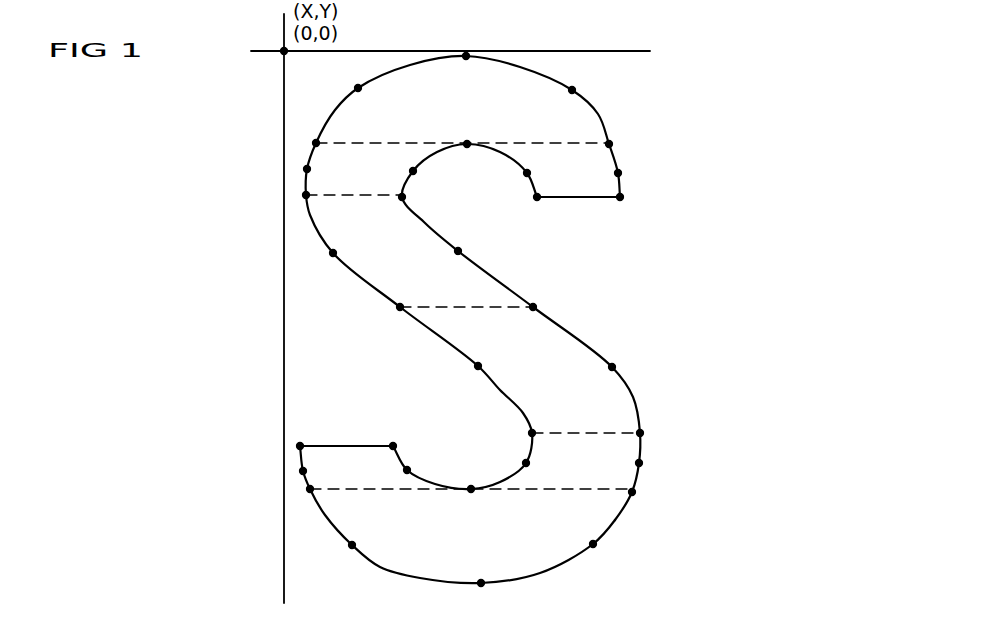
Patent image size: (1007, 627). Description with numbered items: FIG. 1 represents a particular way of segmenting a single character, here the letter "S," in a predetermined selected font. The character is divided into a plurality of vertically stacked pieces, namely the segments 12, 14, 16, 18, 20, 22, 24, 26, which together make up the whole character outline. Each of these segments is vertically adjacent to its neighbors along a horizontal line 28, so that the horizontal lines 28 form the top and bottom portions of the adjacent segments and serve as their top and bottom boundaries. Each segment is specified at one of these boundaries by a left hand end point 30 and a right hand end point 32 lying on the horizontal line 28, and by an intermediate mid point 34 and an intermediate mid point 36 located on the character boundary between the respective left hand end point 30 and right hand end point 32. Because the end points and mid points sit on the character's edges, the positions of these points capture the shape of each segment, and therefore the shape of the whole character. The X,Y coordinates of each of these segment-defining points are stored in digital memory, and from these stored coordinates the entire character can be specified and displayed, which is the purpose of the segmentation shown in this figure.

The segment 12 is at (583, 112).
The segment 14 is at (587, 178).
The segment 16 is at (320, 181).
The segment 18 is at (448, 278).
The segment 20 is at (595, 412).
The segment 22 is at (613, 483).
The segment 24 is at (318, 478).
The segment 26 is at (568, 535).
The horizontal line 28 is at (364, 142).
The left hand end point 30 is at (466, 56).
The right hand end point 32 is at (611, 143).
The intermediate mid point 34 is at (358, 88).
The intermediate mid point 36 is at (574, 90).